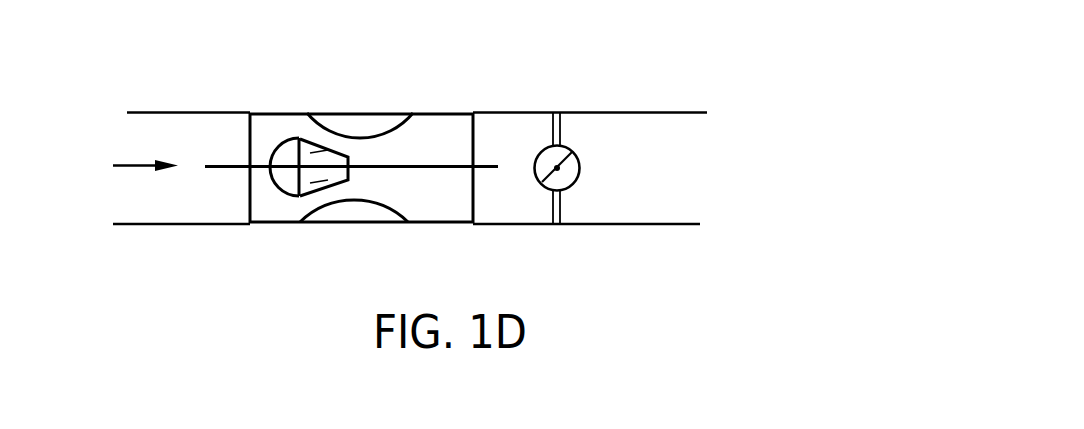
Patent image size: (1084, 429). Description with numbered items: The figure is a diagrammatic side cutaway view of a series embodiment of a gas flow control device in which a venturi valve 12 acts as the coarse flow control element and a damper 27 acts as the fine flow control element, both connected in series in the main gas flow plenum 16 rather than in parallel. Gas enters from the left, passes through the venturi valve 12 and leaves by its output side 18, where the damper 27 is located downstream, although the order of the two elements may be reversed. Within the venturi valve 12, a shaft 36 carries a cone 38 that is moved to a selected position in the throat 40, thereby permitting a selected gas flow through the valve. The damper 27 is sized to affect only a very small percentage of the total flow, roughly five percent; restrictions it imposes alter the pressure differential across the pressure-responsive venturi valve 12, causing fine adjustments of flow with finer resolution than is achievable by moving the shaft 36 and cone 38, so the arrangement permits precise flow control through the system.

The venturi valve 12 is at (420, 132).
The gas flow plenum 16 is at (183, 125).
The output side 18 is at (633, 128).
The damper 27 is at (568, 148).
The shaft 36 is at (433, 165).
The cone 38 is at (283, 145).
The throat 40 is at (352, 132).